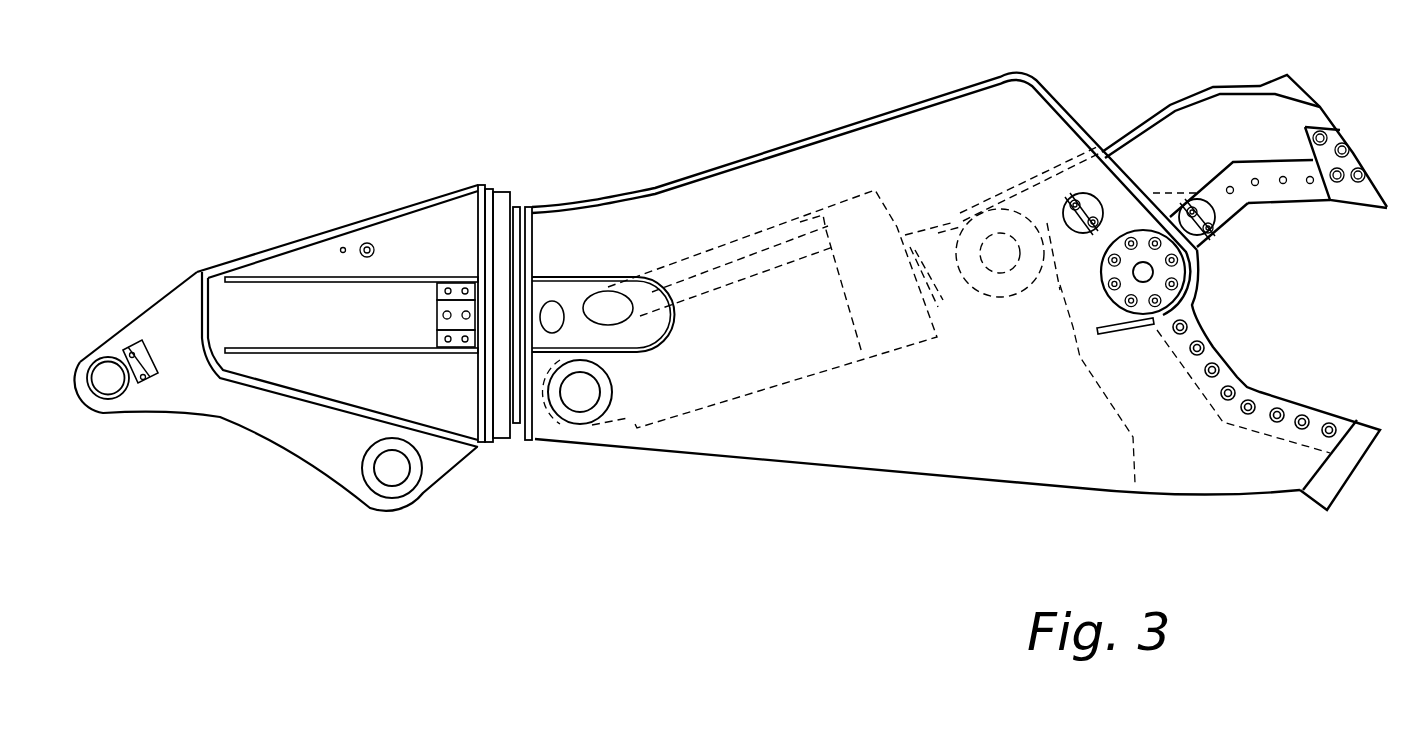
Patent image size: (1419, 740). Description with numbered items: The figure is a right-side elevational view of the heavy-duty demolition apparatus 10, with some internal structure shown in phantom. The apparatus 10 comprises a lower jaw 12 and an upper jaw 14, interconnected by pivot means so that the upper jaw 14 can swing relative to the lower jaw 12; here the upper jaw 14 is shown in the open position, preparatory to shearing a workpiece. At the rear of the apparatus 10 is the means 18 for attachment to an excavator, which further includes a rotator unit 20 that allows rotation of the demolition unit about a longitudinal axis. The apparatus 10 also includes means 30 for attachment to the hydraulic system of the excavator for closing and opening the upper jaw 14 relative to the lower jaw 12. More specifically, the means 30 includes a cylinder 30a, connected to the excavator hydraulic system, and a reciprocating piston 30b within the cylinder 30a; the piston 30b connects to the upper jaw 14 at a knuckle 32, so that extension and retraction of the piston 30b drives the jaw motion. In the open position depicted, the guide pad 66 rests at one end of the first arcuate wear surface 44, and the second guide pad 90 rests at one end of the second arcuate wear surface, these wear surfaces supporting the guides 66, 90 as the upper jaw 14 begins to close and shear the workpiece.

The heavy-duty demolition apparatus 10 is at (714, 123).
The lower jaw 12 is at (1223, 463).
The upper jaw 14 is at (1350, 156).
The means for attachment to the excavator 18 is at (330, 232).
The rotator unit 20 is at (500, 193).
The means for attachment to the hydraulic system 30 is at (845, 242).
The cylinder 30a is at (763, 358).
The reciprocating piston 30b is at (937, 330).
The knuckle 32 is at (1003, 300).
The first arcuate wear surface 44 is at (1047, 223).
The guide pad 66 is at (1093, 207).
The second guide pad 90 is at (1217, 230).